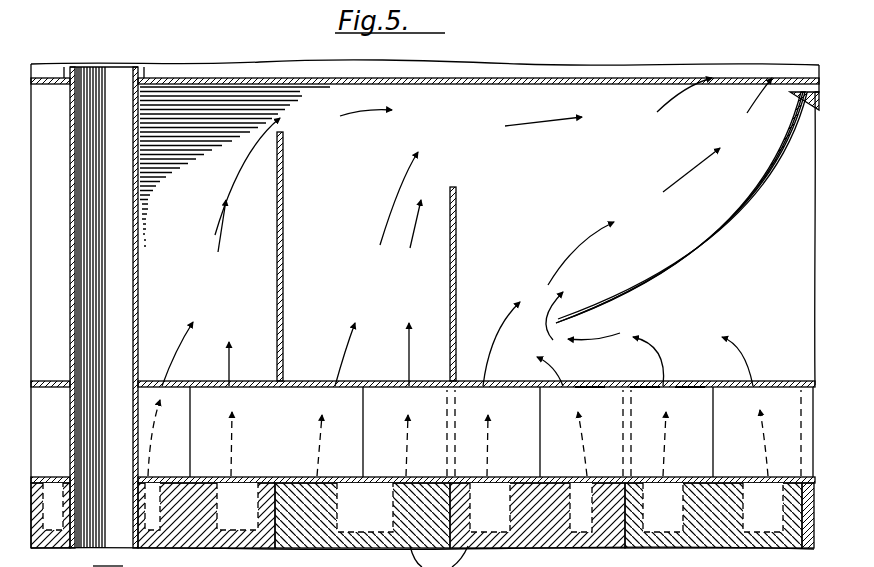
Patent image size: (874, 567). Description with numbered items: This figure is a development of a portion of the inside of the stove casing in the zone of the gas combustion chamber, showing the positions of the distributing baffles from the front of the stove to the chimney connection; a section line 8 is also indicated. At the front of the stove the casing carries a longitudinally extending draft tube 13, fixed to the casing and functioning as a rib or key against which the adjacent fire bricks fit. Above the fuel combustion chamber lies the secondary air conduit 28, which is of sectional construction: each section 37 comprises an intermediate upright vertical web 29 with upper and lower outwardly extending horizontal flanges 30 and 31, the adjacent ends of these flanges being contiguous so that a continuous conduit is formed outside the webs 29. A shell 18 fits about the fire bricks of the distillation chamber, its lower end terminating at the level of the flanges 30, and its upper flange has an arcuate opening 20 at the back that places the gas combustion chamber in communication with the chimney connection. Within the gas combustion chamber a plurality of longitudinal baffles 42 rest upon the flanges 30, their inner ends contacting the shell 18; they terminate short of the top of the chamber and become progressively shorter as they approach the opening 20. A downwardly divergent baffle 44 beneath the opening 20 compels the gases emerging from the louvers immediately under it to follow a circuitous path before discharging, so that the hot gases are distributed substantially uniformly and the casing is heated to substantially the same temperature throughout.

The section line 8 is at (276, 566).
The draft tube 13 is at (118, 326).
The shell 18 is at (535, 96).
The arcuate opening 20 is at (672, 84).
The secondary air conduit 28 is at (690, 384).
The upright vertical web 29 is at (591, 384).
The upper horizontal flange 30 is at (643, 386).
The lower horizontal flange 31 is at (642, 478).
The section 37 is at (392, 382).
The longitudinal baffles 42 is at (284, 183).
The downwardly divergent baffle 44 is at (727, 224).